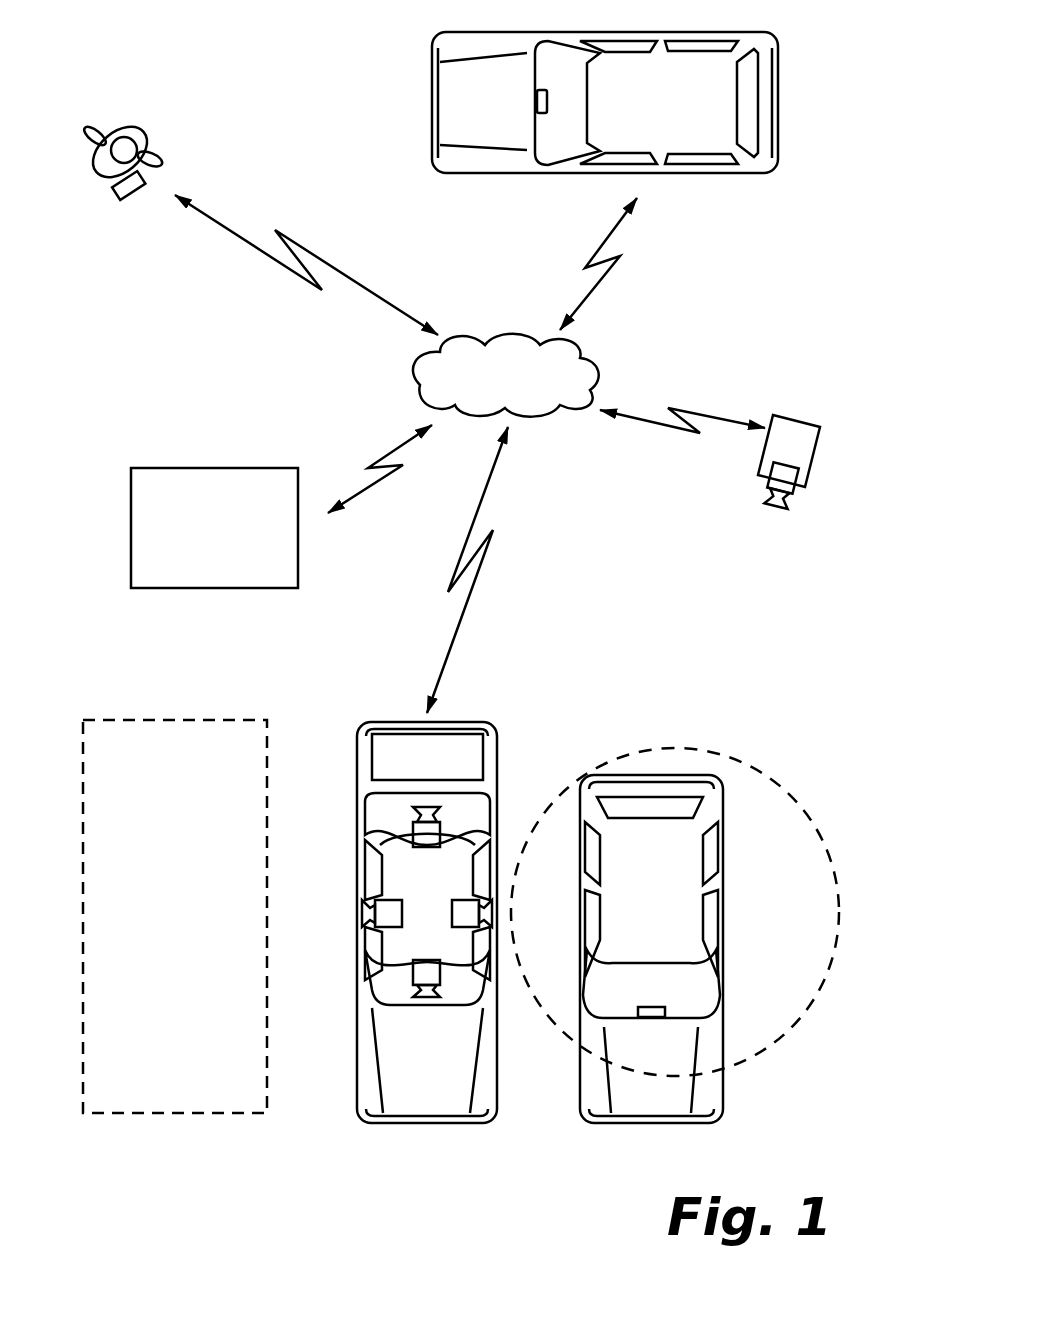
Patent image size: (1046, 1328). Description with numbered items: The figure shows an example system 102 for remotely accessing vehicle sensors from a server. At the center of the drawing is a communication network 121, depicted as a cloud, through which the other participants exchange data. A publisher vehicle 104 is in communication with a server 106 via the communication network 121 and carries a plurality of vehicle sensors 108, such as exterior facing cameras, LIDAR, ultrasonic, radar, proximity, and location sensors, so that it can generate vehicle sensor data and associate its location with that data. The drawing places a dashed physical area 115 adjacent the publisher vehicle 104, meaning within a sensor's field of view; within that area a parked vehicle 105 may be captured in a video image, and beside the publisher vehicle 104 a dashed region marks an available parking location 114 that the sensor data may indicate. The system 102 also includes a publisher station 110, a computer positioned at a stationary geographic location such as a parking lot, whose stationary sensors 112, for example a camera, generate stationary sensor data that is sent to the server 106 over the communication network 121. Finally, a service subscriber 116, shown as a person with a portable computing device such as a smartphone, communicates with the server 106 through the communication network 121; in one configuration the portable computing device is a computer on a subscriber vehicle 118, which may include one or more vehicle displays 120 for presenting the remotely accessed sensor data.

The system 102 is at (278, 72).
The publisher vehicle 104 is at (397, 752).
The parked vehicle 105 is at (651, 949).
The server 106 is at (214, 528).
The vehicle sensors 108 is at (478, 887).
The publisher station 110 is at (795, 438).
The stationary sensors 112 is at (782, 478).
The available parking location 114 is at (175, 916).
The physical area 115 is at (678, 748).
The service subscriber 116 is at (130, 196).
The subscriber vehicle 118 is at (690, 135).
The vehicle displays 120 is at (537, 100).
The communication network 121 is at (505, 337).